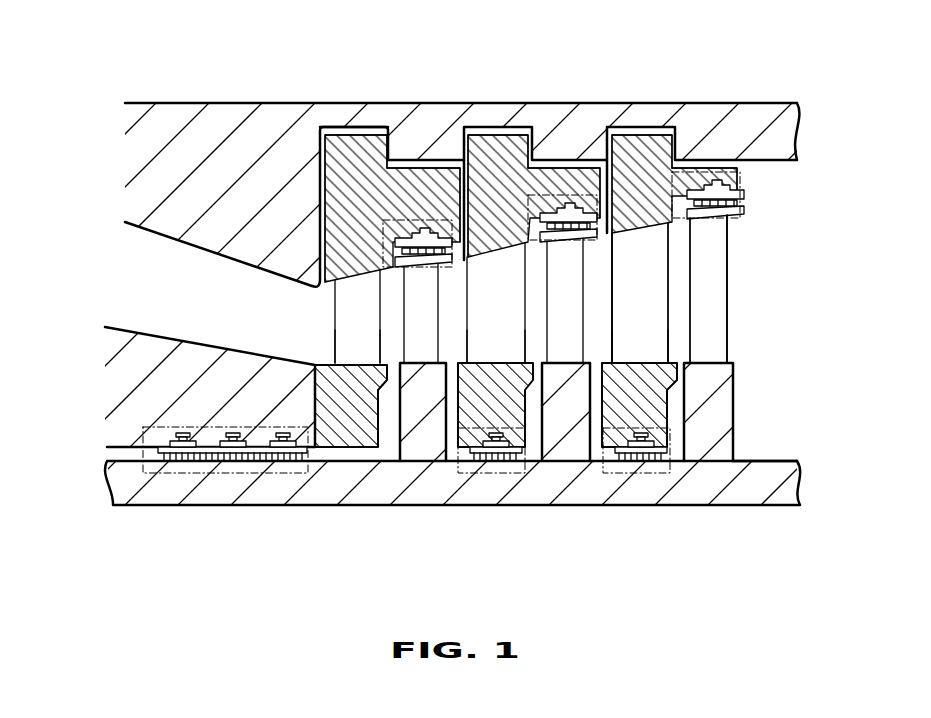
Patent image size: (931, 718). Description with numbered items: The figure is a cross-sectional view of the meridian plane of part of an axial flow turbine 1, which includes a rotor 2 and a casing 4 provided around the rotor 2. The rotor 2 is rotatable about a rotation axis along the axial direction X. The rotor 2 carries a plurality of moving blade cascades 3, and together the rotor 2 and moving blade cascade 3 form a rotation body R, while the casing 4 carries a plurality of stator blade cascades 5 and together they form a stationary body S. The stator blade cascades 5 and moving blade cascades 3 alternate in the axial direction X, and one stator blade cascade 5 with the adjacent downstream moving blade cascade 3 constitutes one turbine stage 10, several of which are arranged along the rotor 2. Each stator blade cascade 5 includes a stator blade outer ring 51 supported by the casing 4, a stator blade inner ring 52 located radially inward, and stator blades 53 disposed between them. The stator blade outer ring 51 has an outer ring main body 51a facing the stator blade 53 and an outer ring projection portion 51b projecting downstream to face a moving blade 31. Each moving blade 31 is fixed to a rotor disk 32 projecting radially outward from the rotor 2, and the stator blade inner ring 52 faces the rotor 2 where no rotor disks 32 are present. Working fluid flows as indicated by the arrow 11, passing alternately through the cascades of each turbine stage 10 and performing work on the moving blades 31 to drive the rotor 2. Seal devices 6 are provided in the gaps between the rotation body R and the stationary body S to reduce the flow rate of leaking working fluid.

The axial flow turbine 1 is at (478, 57).
The rotor 2 is at (118, 503).
The moving blade cascade 3 is at (733, 273).
The casing 4 is at (233, 123).
The stator blade cascade 5 is at (675, 262).
The seal device 6 is at (383, 238).
The turbine stage 10 is at (778, 218).
The arrow indicating working fluid flow 11 is at (275, 310).
The moving blade 31 is at (420, 327).
The rotor disk 32 is at (438, 420).
The stator blade outer ring 51 is at (357, 268).
The outer ring main body 51a is at (337, 153).
The outer ring projection portion 51b is at (402, 182).
The stator blade inner ring 52 is at (363, 395).
The stator blade 53 is at (368, 335).
The stationary body S is at (293, 87).
The rotation body R is at (755, 447).
The axial direction X is at (168, 537).